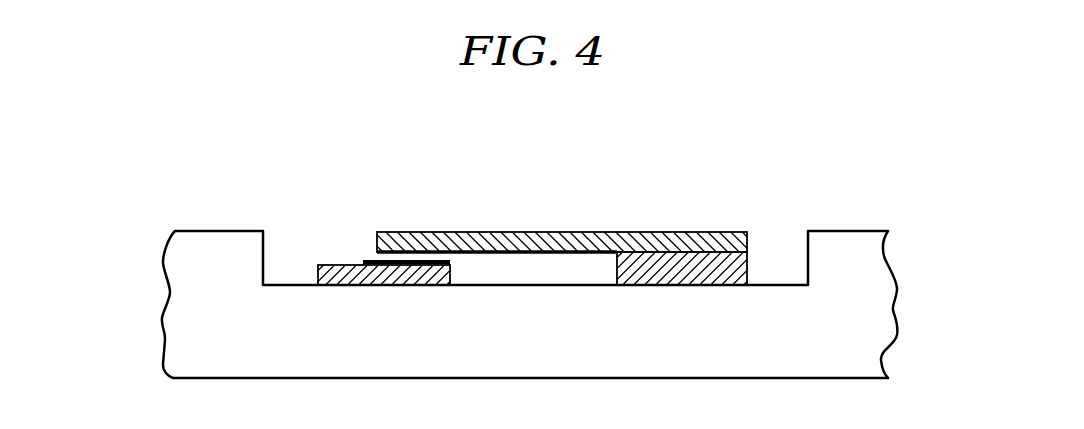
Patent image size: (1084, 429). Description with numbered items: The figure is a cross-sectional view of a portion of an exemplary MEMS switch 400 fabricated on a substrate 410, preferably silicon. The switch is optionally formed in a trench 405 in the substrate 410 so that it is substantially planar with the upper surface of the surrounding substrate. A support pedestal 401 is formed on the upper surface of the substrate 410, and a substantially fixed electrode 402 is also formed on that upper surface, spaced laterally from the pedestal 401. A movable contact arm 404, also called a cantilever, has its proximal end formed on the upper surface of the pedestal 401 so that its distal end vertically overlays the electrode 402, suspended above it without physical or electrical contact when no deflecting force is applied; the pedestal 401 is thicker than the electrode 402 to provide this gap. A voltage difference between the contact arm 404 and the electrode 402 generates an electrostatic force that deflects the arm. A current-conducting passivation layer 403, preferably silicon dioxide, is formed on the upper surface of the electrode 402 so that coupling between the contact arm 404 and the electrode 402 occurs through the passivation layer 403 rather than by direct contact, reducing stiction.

The MEMS switch 400 is at (775, 133).
The support pedestal 401 is at (747, 263).
The electrode 402 is at (335, 265).
The passivation layer 403 is at (425, 260).
The movable contact arm 404 is at (563, 238).
The trench 405 is at (291, 258).
The substrate 410 is at (163, 317).